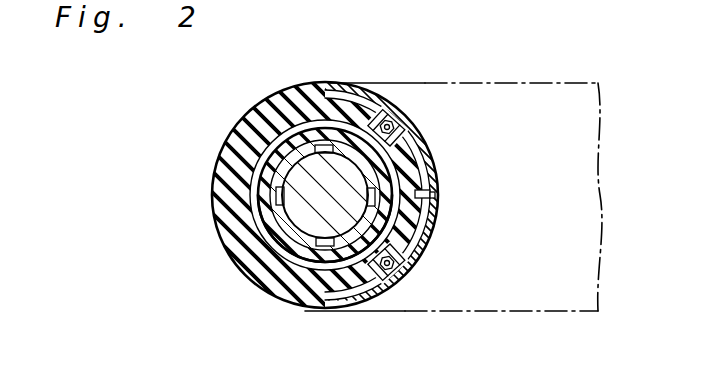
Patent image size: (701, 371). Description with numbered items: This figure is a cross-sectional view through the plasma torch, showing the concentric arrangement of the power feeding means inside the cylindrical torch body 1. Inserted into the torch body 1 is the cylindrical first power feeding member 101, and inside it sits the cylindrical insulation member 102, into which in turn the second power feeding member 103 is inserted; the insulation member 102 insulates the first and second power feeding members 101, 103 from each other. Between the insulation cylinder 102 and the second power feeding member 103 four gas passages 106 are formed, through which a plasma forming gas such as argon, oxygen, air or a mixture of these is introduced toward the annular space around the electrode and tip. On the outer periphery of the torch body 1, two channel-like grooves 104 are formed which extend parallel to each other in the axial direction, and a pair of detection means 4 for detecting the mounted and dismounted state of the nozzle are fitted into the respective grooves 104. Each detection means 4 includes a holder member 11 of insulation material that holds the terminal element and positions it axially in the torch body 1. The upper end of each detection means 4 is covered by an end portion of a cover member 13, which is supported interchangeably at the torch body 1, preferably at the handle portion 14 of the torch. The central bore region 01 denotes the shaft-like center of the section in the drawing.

The torch body 1 is at (228, 210).
The shaft bore 01 is at (326, 196).
The detection means 4 is at (401, 107).
The holder member 11 is at (376, 103).
The cover member 13 is at (436, 163).
The handle portion 14 is at (570, 83).
The first power feeding member 101 is at (263, 160).
The insulation member 102 is at (273, 224).
The second power feeding member 103 is at (330, 282).
The channel-like groove 104 is at (409, 113).
The gas passage 106 is at (323, 146).